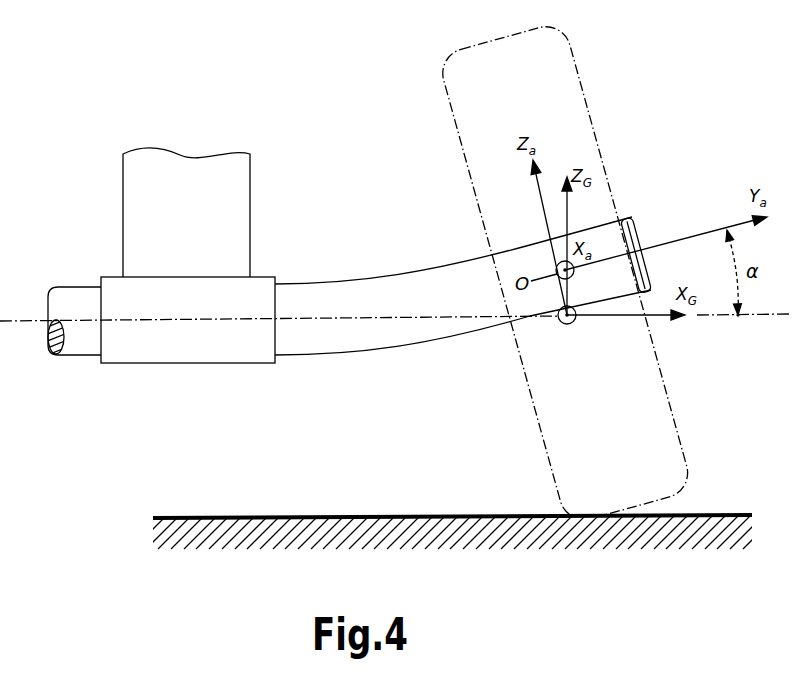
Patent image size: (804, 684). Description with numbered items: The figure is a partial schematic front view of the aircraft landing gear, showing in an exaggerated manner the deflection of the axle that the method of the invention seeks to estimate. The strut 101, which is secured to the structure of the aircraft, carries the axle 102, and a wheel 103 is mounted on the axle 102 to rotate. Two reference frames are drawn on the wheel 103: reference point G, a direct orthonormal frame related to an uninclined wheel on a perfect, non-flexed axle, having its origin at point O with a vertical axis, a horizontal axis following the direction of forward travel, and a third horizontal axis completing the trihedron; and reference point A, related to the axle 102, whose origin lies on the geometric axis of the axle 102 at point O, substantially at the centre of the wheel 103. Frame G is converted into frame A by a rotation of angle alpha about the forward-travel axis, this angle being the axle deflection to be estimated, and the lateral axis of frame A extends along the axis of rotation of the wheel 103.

The strut 101 is at (248, 207).
The axle 102 is at (386, 343).
The wheel 103 is at (557, 72).